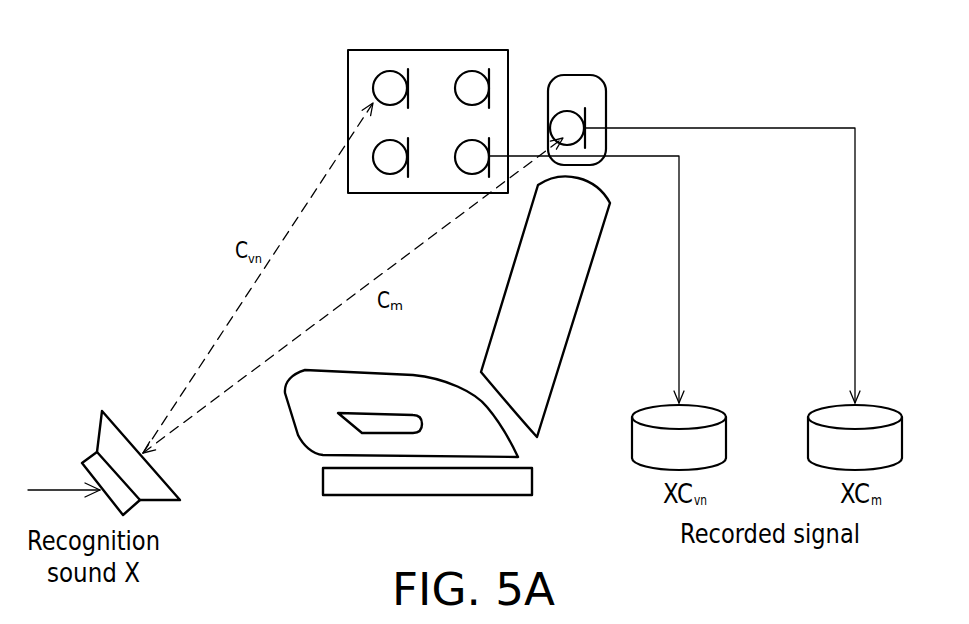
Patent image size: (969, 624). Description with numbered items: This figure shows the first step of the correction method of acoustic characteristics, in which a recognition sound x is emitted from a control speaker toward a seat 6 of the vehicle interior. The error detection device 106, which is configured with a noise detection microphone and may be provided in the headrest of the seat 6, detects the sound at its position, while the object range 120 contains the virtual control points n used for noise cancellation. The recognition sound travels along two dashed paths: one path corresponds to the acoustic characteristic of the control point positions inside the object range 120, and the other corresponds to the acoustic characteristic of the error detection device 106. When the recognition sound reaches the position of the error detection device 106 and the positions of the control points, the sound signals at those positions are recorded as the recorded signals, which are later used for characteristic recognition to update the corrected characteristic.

The object range 120 is at (428, 47).
The error detection device 106 is at (597, 50).
The seat 6 is at (577, 325).